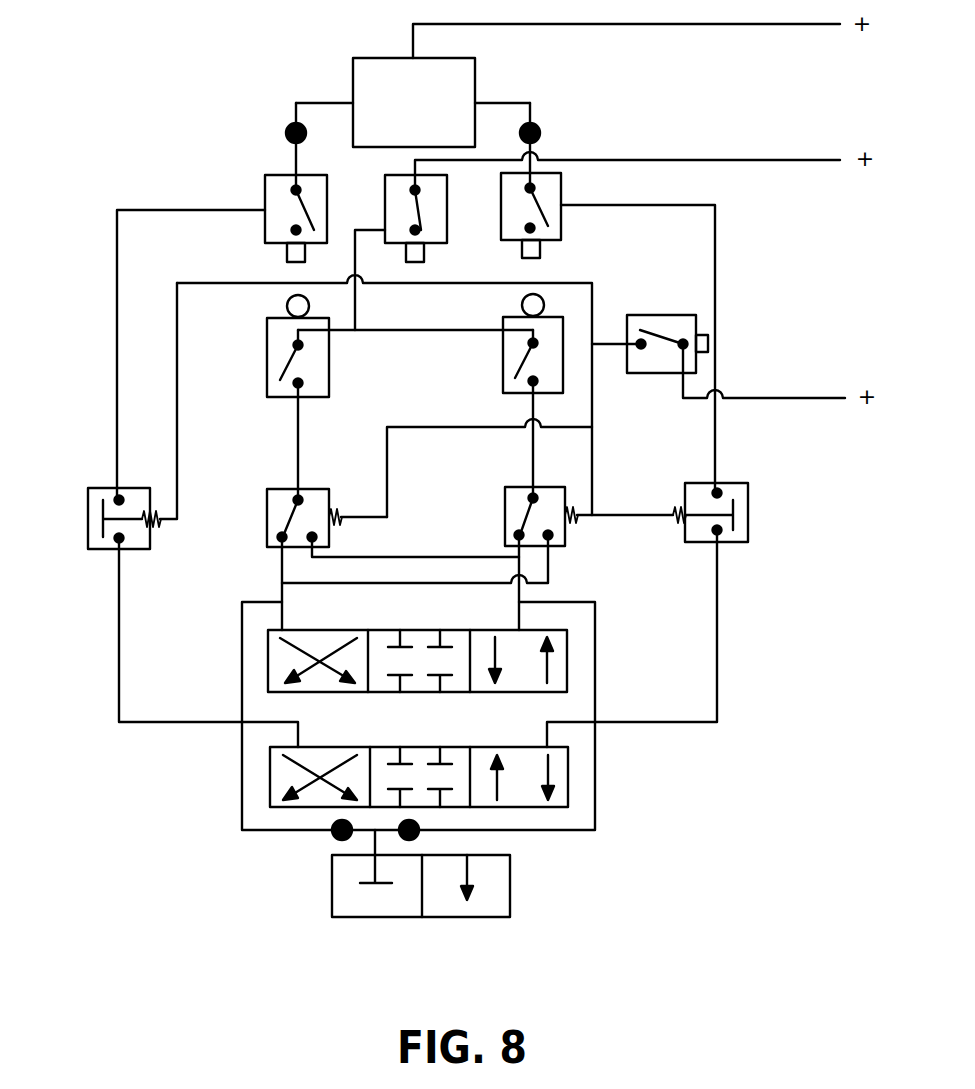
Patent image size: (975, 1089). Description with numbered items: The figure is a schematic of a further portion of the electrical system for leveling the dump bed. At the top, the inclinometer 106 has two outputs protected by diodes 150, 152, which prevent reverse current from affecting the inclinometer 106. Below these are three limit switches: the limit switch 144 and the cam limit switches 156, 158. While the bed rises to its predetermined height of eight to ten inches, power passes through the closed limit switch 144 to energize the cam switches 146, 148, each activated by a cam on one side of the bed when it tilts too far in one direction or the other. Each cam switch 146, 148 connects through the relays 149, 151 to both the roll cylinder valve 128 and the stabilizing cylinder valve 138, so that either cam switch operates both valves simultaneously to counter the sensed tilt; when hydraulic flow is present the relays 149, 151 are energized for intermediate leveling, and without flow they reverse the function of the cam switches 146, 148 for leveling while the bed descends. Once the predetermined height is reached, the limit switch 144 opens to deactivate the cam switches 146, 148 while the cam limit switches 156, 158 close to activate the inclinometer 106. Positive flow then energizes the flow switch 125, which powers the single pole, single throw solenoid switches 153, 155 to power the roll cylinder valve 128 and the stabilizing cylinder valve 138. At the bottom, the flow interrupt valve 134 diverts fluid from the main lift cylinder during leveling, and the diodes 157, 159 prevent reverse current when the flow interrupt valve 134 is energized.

The inclinometer 106 is at (414, 102).
The flow switch 125 is at (660, 315).
The roll cylinder valve 128 is at (425, 627).
The flow interrupt valve 134 is at (453, 917).
The stabilizing cylinder valve 138 is at (425, 745).
The limit switch 144 is at (447, 218).
The cam switch 146 is at (267, 382).
The cam switch 148 is at (503, 376).
The relay 149 is at (267, 527).
The diode 150 is at (540, 131).
The relay 151 is at (505, 522).
The diode 152 is at (286, 132).
The single pole, single throw solenoid switch 153 is at (88, 540).
The single pole, single throw solenoid switch 155 is at (748, 527).
The cam limit switch 156 is at (561, 226).
The diode 157 is at (420, 834).
The cam limit switch 158 is at (265, 233).
The diode 159 is at (333, 835).